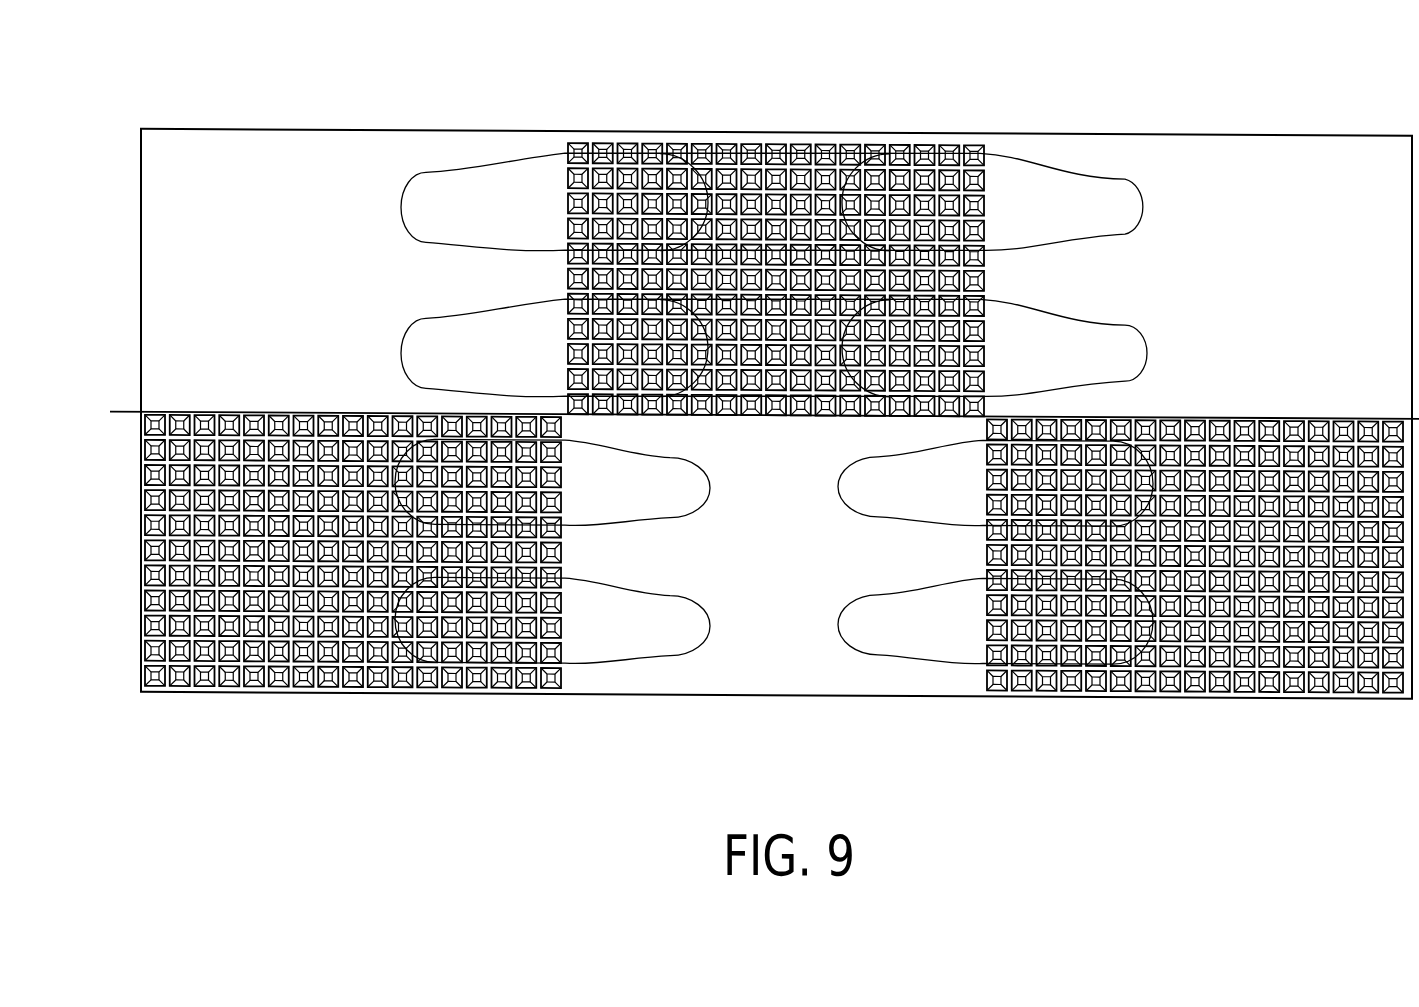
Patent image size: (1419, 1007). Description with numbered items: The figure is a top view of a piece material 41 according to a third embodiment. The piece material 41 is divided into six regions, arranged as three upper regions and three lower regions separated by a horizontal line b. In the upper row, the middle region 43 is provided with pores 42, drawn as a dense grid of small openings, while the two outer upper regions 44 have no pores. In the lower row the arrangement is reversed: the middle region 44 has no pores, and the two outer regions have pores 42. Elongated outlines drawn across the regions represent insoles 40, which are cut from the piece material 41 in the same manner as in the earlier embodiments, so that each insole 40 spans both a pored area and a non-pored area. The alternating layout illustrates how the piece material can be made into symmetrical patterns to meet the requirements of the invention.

The insole 40 is at (501, 155).
The piece material 41 is at (265, 126).
The pores 42 is at (800, 146).
The middle upper region 43 is at (740, 144).
The region without pores 44 is at (380, 153).
The line b is at (125, 411).